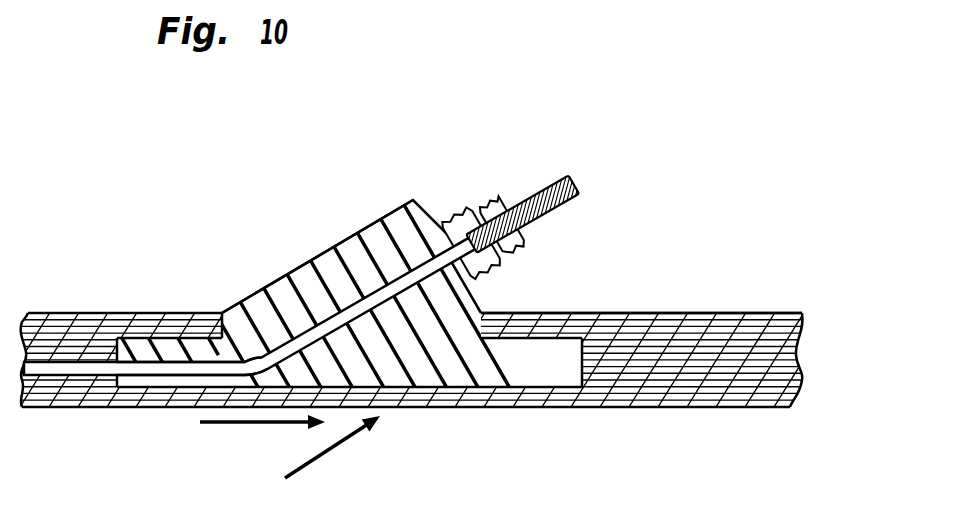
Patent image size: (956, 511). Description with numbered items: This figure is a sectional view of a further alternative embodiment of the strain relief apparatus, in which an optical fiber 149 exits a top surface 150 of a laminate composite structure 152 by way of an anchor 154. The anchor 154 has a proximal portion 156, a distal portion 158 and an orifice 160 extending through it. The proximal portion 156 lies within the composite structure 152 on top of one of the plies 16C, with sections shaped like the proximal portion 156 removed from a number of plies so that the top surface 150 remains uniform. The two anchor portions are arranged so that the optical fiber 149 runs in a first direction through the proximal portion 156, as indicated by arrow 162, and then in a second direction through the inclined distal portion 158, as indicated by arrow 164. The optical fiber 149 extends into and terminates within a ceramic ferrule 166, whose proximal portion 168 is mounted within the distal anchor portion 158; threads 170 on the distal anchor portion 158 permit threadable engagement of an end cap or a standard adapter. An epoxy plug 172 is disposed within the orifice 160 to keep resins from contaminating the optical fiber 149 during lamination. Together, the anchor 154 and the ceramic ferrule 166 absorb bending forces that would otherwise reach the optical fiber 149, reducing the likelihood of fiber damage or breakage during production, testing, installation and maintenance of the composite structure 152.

The top surface 150 is at (682, 314).
The laminate composite structure 152 is at (630, 309).
The ply 16C is at (808, 333).
The anchor 154 is at (262, 272).
The distal portion 158 is at (333, 247).
The proximal portion 156 is at (178, 337).
The threads 170 is at (446, 219).
The orifice 160 is at (378, 290).
The epoxy plug 172 is at (214, 381).
The optical fiber 149 is at (155, 370).
The proximal portion 168 is at (496, 196).
The ceramic ferrule 166 is at (556, 170).
The arrow 162 is at (262, 436).
The arrow 164 is at (332, 451).